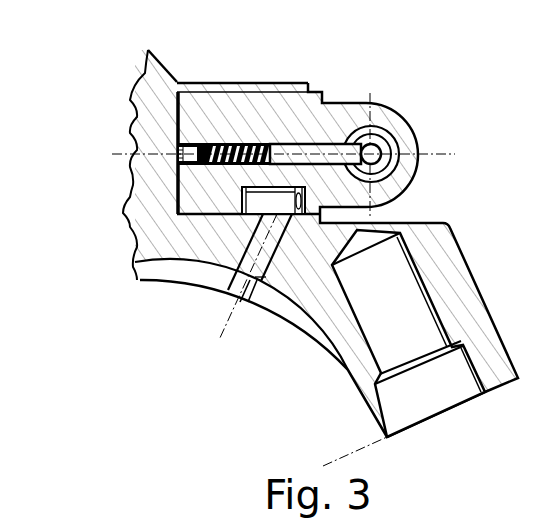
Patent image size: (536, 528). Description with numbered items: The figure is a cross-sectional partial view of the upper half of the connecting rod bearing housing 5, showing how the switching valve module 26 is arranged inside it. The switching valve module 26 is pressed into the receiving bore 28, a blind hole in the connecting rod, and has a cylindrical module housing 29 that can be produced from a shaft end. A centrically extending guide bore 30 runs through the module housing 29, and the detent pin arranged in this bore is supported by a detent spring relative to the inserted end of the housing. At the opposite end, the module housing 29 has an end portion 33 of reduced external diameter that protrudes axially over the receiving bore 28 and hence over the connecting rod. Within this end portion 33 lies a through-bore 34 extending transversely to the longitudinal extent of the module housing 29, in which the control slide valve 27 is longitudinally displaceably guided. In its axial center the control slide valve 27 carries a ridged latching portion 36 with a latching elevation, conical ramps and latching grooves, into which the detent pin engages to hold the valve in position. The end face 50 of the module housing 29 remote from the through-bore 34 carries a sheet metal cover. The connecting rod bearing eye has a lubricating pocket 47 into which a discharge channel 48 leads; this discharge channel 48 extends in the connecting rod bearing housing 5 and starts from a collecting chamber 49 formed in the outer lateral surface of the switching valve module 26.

The connecting rod bearing housing 5 is at (143, 182).
The switching valve module 26 is at (404, 108).
The control slide valve 27 is at (384, 146).
The receiving bore 28 is at (245, 98).
The module housing 29 is at (292, 117).
The guide bore 30 is at (217, 133).
The end portion 33 is at (358, 115).
The through-bore 34 is at (412, 158).
The latching portion 36 is at (404, 166).
The lubricating pocket 47 is at (302, 309).
The discharge channel 48 is at (248, 245).
The collecting chamber 49 is at (260, 196).
The end face 50 is at (177, 118).